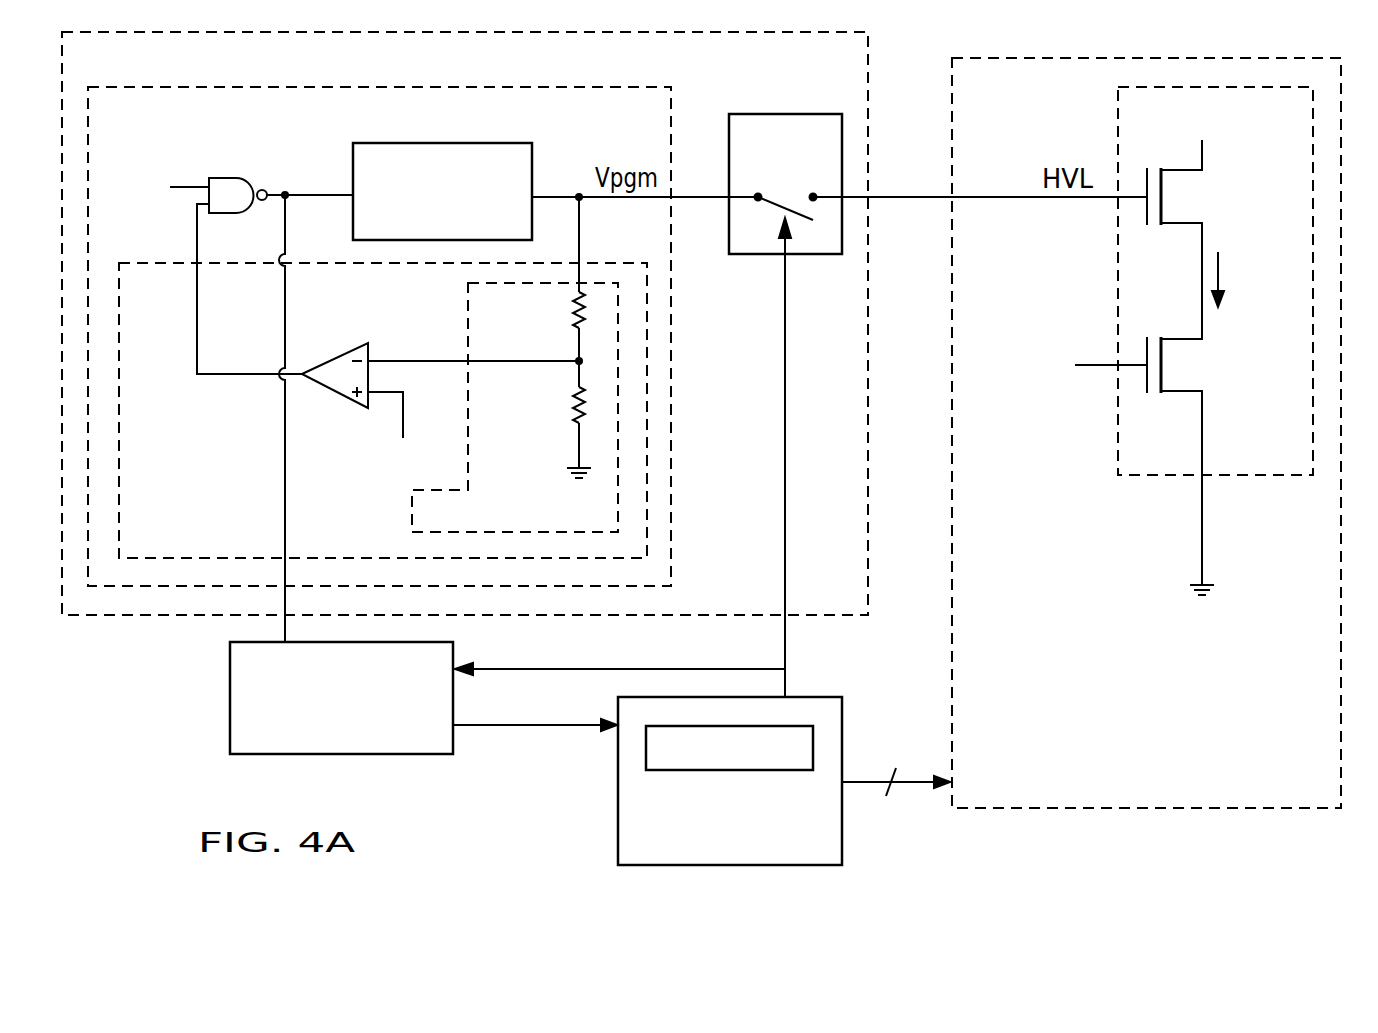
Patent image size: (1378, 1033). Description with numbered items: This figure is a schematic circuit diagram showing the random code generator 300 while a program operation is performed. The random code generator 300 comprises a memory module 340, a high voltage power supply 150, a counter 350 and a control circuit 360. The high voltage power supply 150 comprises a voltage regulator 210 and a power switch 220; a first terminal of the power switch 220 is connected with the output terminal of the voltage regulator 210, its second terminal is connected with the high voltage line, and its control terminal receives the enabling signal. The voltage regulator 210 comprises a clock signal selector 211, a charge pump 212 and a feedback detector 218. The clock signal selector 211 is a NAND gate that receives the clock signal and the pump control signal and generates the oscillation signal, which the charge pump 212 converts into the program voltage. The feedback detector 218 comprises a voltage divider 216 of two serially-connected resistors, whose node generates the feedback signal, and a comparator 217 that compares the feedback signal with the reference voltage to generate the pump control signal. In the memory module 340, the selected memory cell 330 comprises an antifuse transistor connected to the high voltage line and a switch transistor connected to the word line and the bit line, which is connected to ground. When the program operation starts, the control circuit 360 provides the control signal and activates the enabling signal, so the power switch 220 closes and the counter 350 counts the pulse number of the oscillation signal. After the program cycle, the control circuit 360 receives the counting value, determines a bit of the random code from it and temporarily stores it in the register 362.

The high voltage power supply 150 is at (850, 71).
The voltage regulator 210 is at (363, 126).
The clock signal selector 211 is at (219, 178).
The charge pump 212 is at (465, 227).
The voltage divider 216 is at (531, 492).
The comparator 217 is at (366, 345).
The feedback detector 218 is at (196, 551).
The power switch 220 is at (807, 157).
The random code generator 300 is at (181, 720).
The selected memory cell 330 is at (1184, 122).
The memory module 340 is at (1313, 797).
The counter 350 is at (351, 736).
The control circuit 360 is at (752, 857).
The register 362 is at (808, 761).